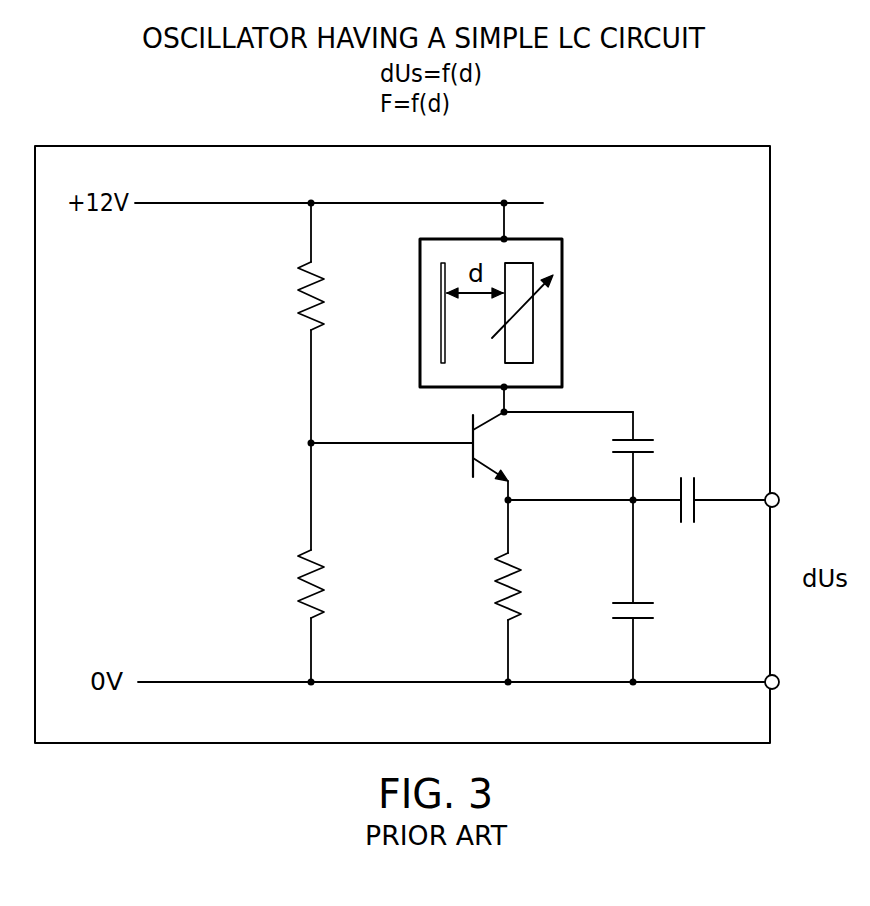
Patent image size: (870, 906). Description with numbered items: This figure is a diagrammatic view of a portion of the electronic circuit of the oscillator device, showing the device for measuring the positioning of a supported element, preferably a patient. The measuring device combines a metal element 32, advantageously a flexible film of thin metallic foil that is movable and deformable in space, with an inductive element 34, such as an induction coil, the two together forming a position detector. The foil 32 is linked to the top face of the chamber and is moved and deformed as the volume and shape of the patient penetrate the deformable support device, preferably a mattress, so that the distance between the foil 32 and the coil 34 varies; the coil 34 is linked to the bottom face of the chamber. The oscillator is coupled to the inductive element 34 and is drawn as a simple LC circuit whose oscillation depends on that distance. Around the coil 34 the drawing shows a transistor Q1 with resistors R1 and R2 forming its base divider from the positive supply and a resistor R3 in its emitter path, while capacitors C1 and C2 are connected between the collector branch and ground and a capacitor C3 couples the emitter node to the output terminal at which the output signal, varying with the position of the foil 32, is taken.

The metal element 32 is at (441, 291).
The inductive element 34 is at (537, 325).
The resistor R1 2.2 kOhm R1 is at (268, 294).
The resistor R2 2.2 kOhm R2 is at (265, 584).
The resistor R3 5.5 kOhm R3 is at (460, 579).
The capacitor C1 100 nF C1 is at (677, 428).
The capacitor C2 100 nF C2 is at (677, 638).
The capacitor C3 10 nF C3 is at (691, 532).
The transistor Q1 BC239 Q1 is at (498, 448).